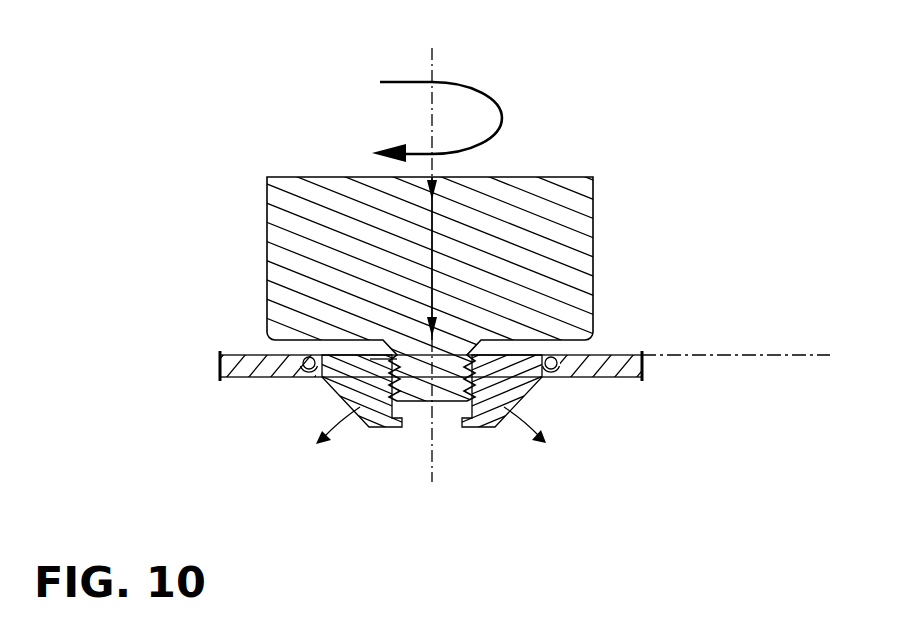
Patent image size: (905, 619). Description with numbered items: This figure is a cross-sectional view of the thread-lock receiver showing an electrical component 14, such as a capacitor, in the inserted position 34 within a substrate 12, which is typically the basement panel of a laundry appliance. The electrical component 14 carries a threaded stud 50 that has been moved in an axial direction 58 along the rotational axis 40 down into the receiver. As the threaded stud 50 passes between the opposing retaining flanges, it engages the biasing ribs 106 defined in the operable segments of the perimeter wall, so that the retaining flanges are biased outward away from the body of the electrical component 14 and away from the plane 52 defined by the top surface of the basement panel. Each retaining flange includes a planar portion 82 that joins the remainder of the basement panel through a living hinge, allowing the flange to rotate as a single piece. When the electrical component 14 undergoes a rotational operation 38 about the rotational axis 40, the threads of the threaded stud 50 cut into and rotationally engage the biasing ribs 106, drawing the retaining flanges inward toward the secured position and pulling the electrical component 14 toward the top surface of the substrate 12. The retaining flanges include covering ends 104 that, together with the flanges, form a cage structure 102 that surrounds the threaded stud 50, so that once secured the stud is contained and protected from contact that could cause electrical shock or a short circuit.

The substrate 12 is at (229, 353).
The electrical component 14 is at (602, 202).
The inserted position 34 is at (228, 246).
The rotational operation 38 is at (503, 120).
The rotational axis 40 is at (434, 66).
The threaded stud 50 is at (419, 350).
The plane 52 is at (733, 353).
The axial direction 58 is at (433, 252).
The planar portion 82 is at (502, 368).
The cage structure 102 is at (570, 400).
The covering ends 104 is at (392, 427).
The biasing ribs 106 is at (369, 427).